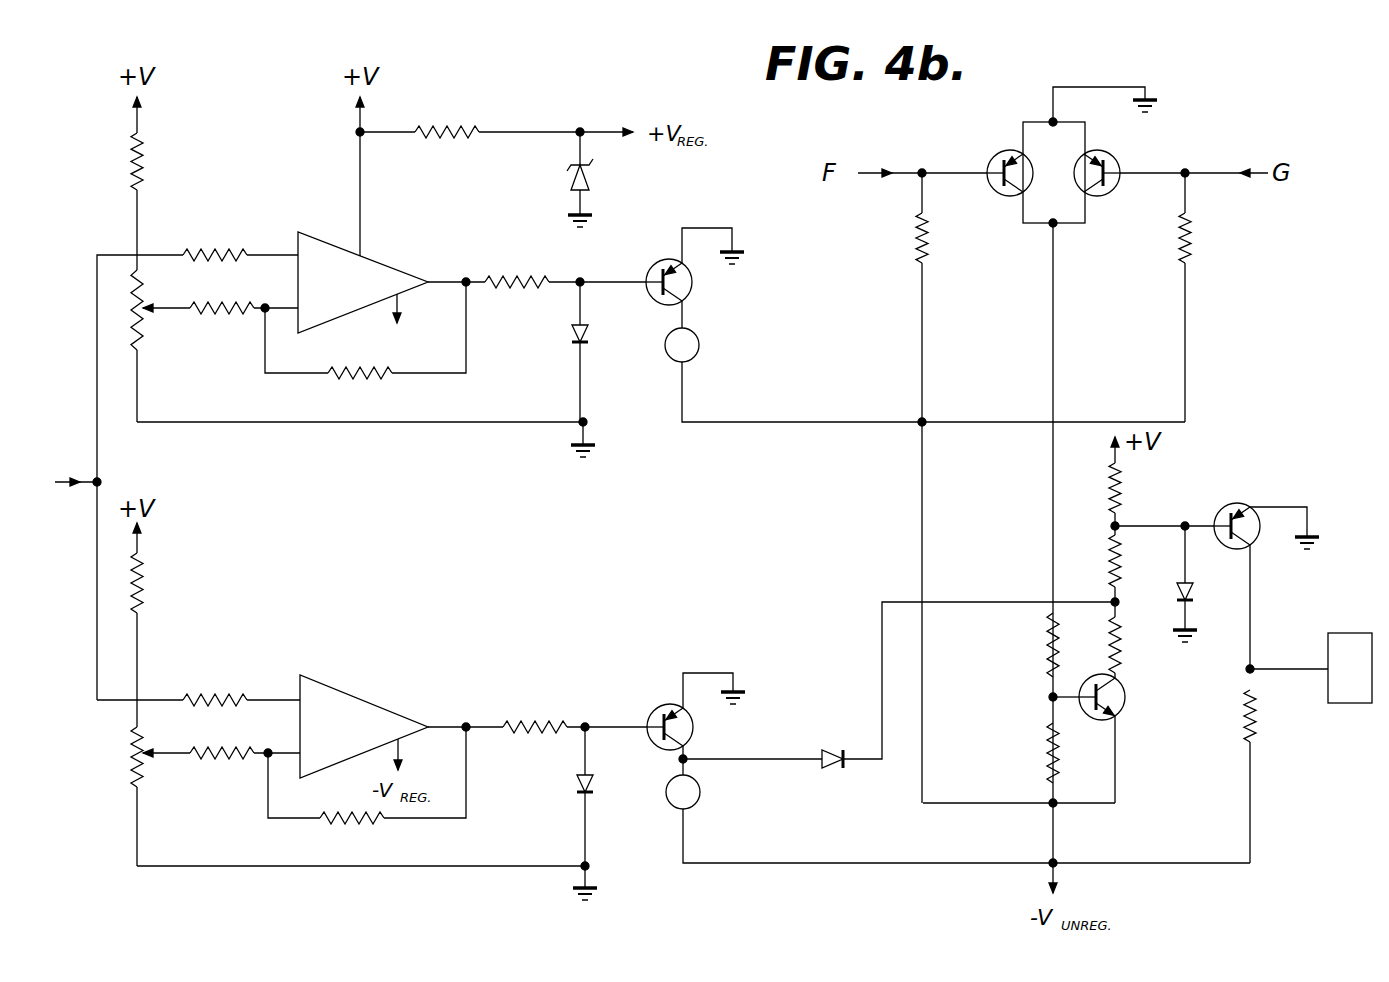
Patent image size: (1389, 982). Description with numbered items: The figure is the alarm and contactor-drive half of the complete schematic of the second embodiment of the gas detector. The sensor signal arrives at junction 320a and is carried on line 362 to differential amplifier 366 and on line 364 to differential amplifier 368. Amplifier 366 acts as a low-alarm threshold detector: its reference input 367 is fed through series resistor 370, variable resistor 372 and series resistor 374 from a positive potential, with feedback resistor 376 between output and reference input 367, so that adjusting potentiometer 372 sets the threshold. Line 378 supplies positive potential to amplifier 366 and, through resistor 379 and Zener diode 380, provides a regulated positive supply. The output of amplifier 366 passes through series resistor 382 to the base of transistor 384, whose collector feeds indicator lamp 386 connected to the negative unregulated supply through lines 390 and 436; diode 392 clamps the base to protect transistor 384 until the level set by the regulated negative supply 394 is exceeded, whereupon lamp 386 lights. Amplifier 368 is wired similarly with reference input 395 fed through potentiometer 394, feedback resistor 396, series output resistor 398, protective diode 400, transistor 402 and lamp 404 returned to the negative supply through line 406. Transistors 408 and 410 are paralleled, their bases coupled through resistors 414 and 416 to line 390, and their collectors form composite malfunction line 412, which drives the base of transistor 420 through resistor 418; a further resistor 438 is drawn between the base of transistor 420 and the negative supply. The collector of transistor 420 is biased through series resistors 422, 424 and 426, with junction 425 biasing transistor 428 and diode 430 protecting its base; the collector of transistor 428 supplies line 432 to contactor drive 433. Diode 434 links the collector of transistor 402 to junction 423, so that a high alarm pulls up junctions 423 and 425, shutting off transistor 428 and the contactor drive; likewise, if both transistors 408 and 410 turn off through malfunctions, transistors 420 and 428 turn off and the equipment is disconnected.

The junction 320a is at (97, 482).
The line 362 is at (118, 225).
The line 364 is at (97, 702).
The differential amplifier 366 is at (325, 222).
The reference input 367 is at (278, 283).
The differential amplifier 368 is at (350, 690).
The series resistor 370 is at (218, 312).
The variable resistor 372 is at (140, 340).
The series resistor 374 is at (137, 172).
The feedback resistor 376 is at (360, 380).
The line 378 is at (362, 214).
The resistor 379 is at (468, 112).
The Zener diode 380 is at (568, 174).
The series resistor 382 is at (535, 258).
The transistor 384 is at (694, 286).
The indicator lamp 386 is at (700, 348).
The line 390 is at (800, 424).
The diode 392 is at (572, 334).
The potentiometer 394 is at (399, 306).
The reference input 395 is at (278, 731).
The feedback resistor 396 is at (345, 828).
The series output resistor 398 is at (520, 722).
The diode 400 is at (575, 783).
The transistor 402 is at (662, 702).
The lamp 404 is at (701, 800).
The line 406 is at (800, 862).
The transistor 408 is at (1000, 152).
The transistor 410 is at (1118, 162).
The line 412 is at (1053, 303).
The resistor 414 is at (917, 238).
The resistor 416 is at (1190, 248).
The resistor 418 is at (1047, 648).
The transistor 420 is at (1120, 710).
The series resistor 422 is at (1118, 655).
The junction 423 is at (1112, 600).
The series resistor 424 is at (1118, 560).
The junction 425 is at (1118, 523).
The series resistor 426 is at (1120, 485).
The transistor 428 is at (1245, 506).
The diode 430 is at (1190, 586).
The line 432 is at (1286, 664).
The contactor drive 433 is at (1352, 618).
The diode 434 is at (840, 747).
The line 436 is at (925, 540).
The resistor 438 is at (1047, 754).